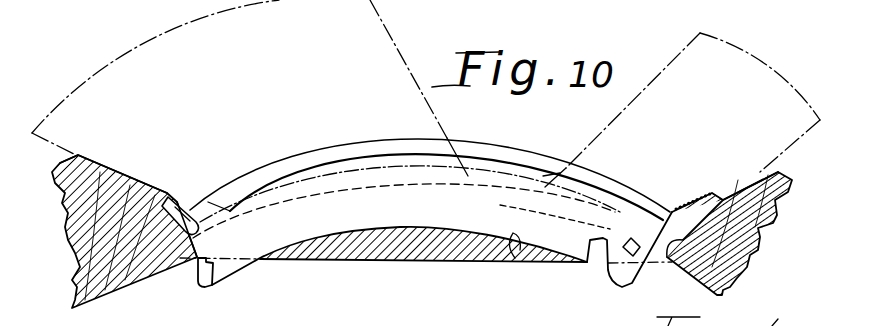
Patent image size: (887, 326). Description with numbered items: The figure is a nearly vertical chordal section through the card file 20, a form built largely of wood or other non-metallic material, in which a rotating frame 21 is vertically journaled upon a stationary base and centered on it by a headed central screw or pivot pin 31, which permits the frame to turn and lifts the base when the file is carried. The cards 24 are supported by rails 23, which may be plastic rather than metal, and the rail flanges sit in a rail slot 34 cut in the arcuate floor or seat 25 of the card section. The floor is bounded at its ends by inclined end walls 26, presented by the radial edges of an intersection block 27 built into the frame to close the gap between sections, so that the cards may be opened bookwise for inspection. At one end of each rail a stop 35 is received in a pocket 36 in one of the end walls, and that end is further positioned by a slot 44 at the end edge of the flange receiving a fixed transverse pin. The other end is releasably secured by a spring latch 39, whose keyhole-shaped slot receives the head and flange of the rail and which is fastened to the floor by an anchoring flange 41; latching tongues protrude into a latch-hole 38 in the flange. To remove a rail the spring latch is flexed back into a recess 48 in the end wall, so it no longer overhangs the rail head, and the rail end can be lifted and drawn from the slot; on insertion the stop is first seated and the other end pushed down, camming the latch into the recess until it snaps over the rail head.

The cards 24 is at (217, 15).
The rails 23 is at (507, 150).
The file 20 is at (551, 145).
The floor or seat 25 is at (459, 186).
The rotating frame 21 is at (428, 262).
The rail slot 34 is at (503, 262).
The intersection block 27 is at (122, 274).
The end wall 26 is at (136, 178).
The stop 35 is at (185, 210).
The pocket 36 is at (163, 262).
The slot 44 is at (200, 287).
The latch-hole 38 is at (623, 258).
The recess 48 is at (666, 264).
The anchoring flange 41 is at (627, 236).
The spring latch 39 is at (675, 206).
The headed central screw or pivot pin 31 is at (520, 0).